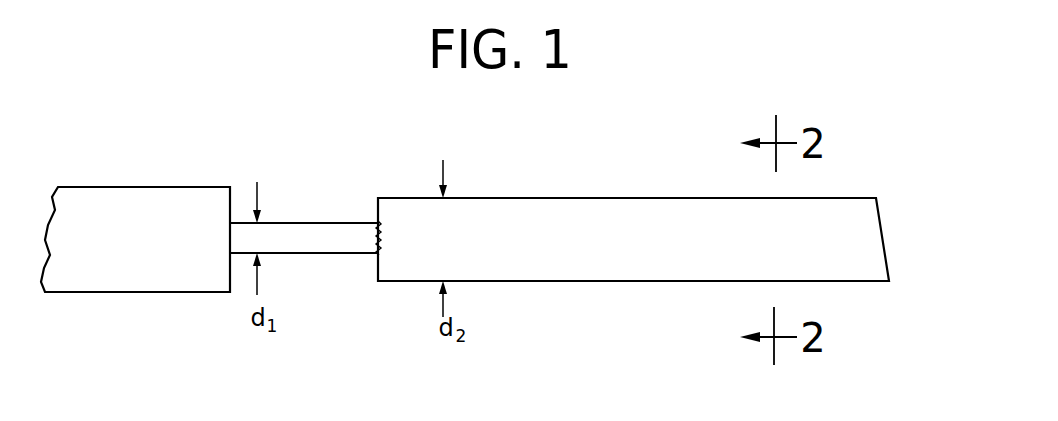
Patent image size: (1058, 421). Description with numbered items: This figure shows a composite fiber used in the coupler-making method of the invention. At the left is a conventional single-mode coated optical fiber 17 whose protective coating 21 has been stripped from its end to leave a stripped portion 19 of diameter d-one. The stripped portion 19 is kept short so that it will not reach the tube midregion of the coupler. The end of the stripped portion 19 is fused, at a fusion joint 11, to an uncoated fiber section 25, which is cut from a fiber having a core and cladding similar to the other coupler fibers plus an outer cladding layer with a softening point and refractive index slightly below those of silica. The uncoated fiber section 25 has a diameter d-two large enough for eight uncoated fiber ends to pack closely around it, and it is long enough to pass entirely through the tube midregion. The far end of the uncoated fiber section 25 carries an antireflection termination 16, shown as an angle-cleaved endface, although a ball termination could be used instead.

The fusion joint 11 is at (373, 241).
The antireflection termination 16 is at (884, 238).
The conventional single-mode coated optical fiber 17 is at (152, 292).
The stripped portion 19 is at (307, 233).
The coating 21 is at (167, 207).
The uncoated fiber section 25 is at (664, 212).